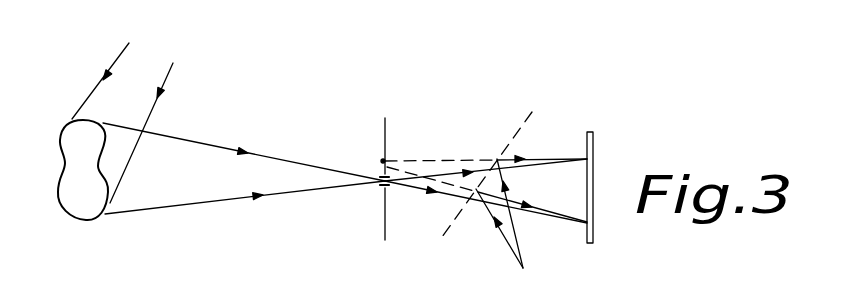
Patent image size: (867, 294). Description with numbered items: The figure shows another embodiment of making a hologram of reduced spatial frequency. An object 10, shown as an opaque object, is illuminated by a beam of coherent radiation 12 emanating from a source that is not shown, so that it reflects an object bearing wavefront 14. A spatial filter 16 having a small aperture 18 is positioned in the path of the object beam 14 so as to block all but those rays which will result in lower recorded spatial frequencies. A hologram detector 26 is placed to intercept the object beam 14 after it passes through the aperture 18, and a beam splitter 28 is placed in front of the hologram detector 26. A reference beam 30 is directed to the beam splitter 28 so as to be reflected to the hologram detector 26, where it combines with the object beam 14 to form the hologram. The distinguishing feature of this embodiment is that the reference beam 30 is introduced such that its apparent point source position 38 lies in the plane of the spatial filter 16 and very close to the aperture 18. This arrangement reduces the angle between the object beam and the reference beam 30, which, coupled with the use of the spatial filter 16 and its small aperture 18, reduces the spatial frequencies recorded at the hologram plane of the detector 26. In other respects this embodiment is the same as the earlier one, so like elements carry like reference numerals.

The object 10 is at (70, 130).
The beam of coherent radiation 12 is at (121, 55).
The object bearing wavefront 14 is at (200, 207).
The spatial filter 16 is at (387, 127).
The aperture 18 is at (392, 189).
The hologram detector 26 is at (593, 132).
The beam splitter 28 is at (527, 113).
The reference beam 30 is at (517, 236).
The apparent point source position 38 is at (383, 161).